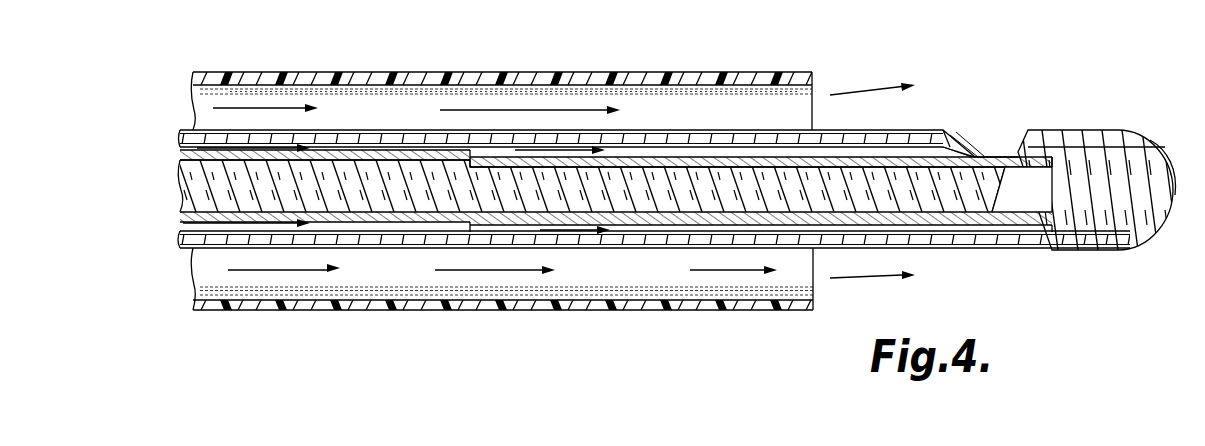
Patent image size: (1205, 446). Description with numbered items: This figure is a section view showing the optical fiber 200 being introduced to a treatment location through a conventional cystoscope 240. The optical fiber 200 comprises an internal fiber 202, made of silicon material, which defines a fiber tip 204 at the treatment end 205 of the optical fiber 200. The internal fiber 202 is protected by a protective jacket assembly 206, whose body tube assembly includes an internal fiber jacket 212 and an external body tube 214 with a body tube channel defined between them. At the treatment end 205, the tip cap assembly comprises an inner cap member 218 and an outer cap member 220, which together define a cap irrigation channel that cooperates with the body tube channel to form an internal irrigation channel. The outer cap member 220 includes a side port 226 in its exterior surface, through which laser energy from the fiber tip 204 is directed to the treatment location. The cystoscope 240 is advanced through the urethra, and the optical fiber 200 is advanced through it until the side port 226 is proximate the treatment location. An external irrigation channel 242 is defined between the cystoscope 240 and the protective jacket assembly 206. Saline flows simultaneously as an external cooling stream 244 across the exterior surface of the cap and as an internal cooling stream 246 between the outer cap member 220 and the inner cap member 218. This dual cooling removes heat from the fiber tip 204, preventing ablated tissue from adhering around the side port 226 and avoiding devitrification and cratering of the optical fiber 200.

The optical fiber 200 is at (1070, 130).
The internal fiber 202 is at (663, 168).
The fiber tip 204 is at (998, 205).
The treatment end 205 is at (1172, 195).
The protective jacket assembly 206 is at (463, 130).
The internal fiber jacket 212 is at (348, 154).
The external body tube 214 is at (377, 254).
The inner cap member 218 is at (648, 250).
The outer cap member 220 is at (556, 240).
The side port 226 is at (962, 140).
The cystoscope 240 is at (412, 72).
The external irrigation channel 242 is at (383, 105).
The external cooling stream 244 is at (195, 276).
The internal cooling stream 246 is at (168, 223).